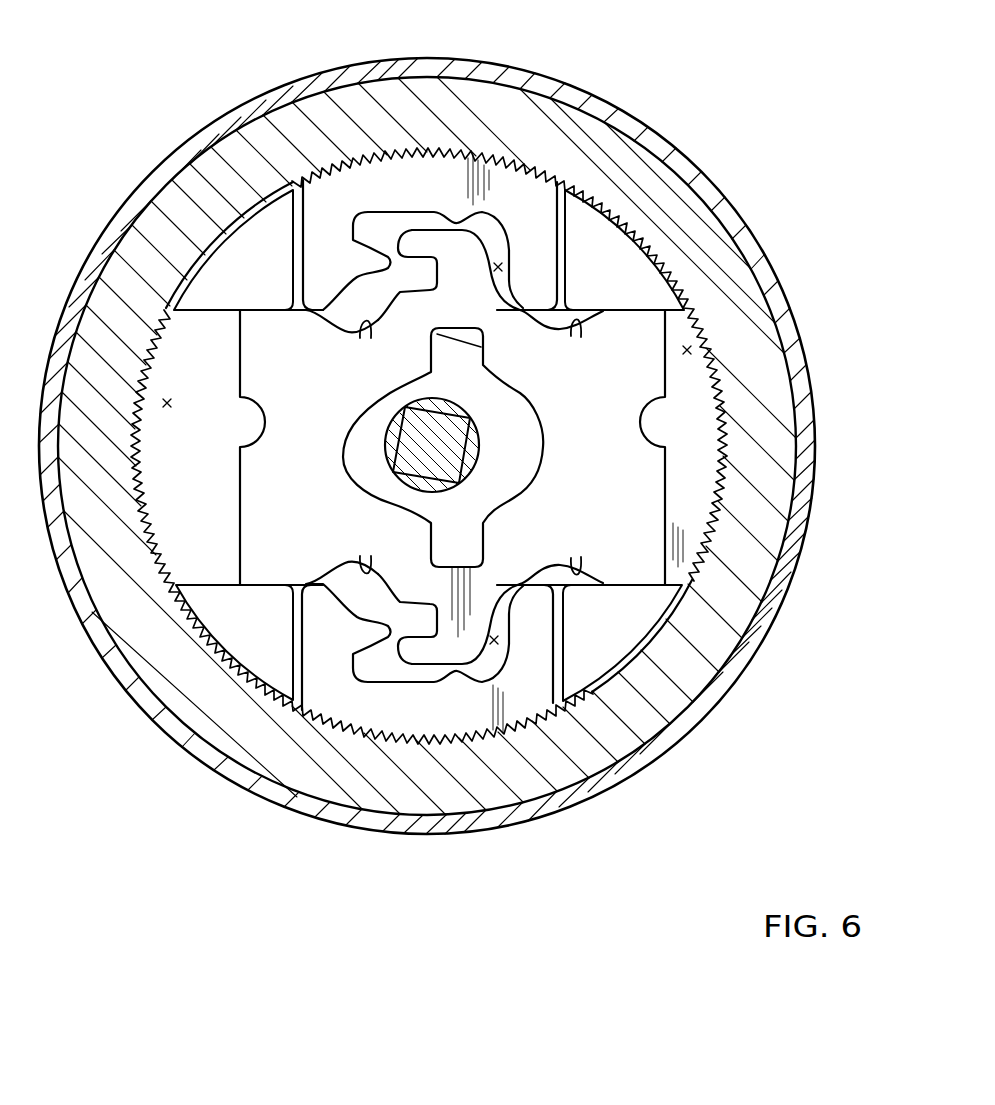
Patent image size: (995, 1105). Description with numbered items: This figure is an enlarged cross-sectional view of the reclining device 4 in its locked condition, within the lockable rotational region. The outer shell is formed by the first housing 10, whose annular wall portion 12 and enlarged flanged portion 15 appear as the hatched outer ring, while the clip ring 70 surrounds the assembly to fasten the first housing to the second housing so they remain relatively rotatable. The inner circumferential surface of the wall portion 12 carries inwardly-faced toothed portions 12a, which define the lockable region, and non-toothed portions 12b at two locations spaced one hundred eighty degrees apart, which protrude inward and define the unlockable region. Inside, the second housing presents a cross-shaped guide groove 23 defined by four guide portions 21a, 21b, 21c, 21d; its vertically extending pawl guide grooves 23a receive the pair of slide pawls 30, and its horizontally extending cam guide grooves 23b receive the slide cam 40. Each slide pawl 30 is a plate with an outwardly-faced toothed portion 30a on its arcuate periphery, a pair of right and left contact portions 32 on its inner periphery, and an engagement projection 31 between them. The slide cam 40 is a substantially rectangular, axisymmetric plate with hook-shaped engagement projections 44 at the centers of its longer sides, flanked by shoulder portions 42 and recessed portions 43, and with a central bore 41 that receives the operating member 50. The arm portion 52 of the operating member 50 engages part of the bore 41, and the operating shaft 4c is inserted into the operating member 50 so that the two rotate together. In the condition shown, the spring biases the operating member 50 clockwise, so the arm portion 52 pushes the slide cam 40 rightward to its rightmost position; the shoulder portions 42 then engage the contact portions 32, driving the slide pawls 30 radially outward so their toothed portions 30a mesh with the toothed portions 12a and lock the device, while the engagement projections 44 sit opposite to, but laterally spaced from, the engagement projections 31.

The reclining device 4 is at (196, 89).
The operating shaft 4c is at (417, 458).
The first housing 10 is at (427, 419).
The annular wall portion 12 is at (427, 419).
The flanged portion 15 is at (549, 138).
The toothed portions 12a is at (451, 141).
The non-toothed portions 12b is at (228, 228).
The guide portion 21a is at (216, 296).
The guide portion 21b is at (607, 276).
The guide portion 21c is at (244, 610).
The guide portion 21d is at (639, 593).
The guide groove 23 is at (451, 475).
The pawl guide grooves 23a is at (500, 265).
The cam guide grooves 23b is at (166, 401).
The slide pawls 30 is at (451, 451).
The toothed portion 30a is at (429, 451).
The engagement projection 31 is at (375, 257).
The contact portions 32 is at (319, 291).
The slide cam 40 is at (250, 469).
The bore 41 is at (450, 421).
The shoulder portions 42 is at (319, 326).
The recessed portions 43 is at (365, 338).
The engagement projections 44 is at (412, 240).
The operating member 50 is at (376, 413).
The arm portion 52 is at (455, 350).
The clip ring 70 is at (165, 150).